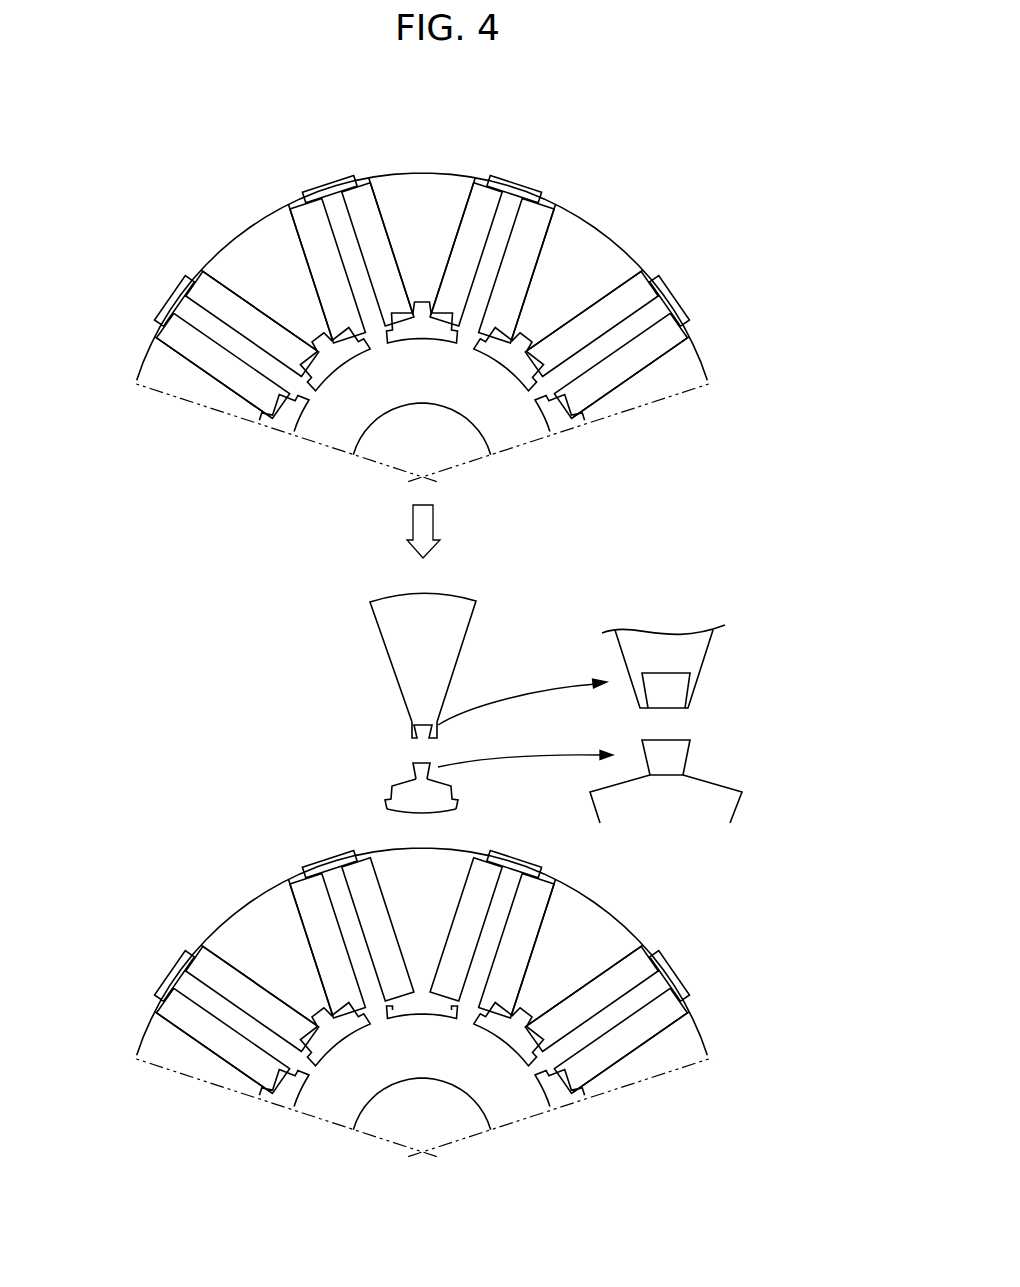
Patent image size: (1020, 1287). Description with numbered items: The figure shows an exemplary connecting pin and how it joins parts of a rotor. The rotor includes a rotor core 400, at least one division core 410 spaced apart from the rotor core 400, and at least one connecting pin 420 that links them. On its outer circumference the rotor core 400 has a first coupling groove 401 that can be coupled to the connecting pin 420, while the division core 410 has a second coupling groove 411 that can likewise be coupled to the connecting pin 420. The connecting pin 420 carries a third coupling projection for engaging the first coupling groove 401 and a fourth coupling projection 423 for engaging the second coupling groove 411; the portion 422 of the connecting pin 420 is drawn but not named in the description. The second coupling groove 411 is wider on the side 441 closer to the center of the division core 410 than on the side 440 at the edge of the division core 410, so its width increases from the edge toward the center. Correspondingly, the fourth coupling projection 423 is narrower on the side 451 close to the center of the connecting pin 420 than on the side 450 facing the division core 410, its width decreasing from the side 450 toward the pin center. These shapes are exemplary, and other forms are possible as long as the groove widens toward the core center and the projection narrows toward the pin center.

The rotor core 400 is at (520, 428).
The first coupling groove 401 is at (393, 1019).
The division core 410 is at (597, 247).
The second coupling groove 411 is at (420, 737).
The connecting pin 420 is at (418, 300).
The arc-shaped portion 422 is at (456, 811).
The fourth coupling projection 423 is at (412, 768).
The side of the second coupling groove at the edge of the division core 440 is at (650, 708).
The side of the second coupling groove closer to the center of the division core 441 is at (647, 692).
The side of the fourth coupling projection facing the division core 450 is at (648, 757).
The side of the fourth coupling projection close to the center of the connecting pin 451 is at (650, 775).